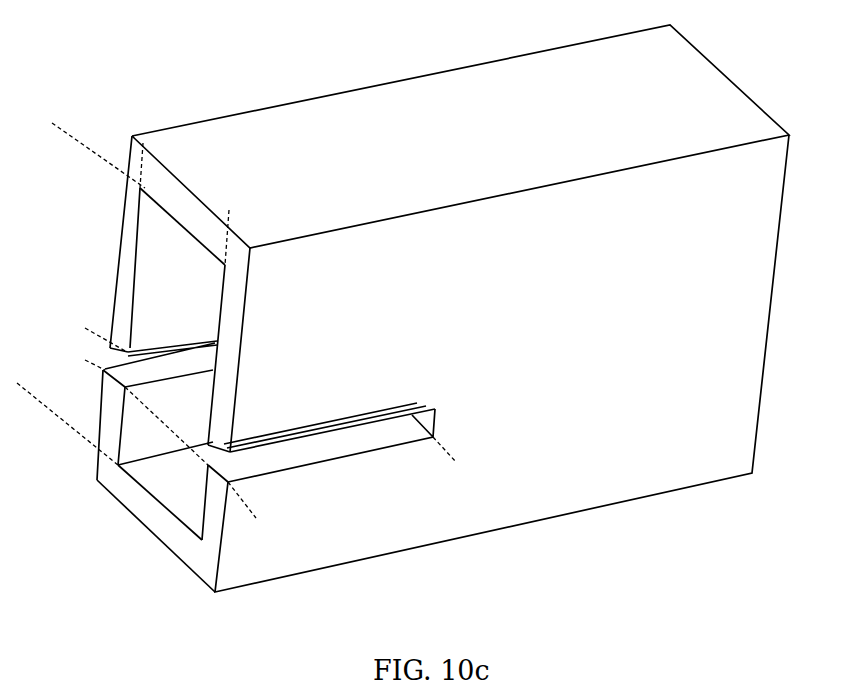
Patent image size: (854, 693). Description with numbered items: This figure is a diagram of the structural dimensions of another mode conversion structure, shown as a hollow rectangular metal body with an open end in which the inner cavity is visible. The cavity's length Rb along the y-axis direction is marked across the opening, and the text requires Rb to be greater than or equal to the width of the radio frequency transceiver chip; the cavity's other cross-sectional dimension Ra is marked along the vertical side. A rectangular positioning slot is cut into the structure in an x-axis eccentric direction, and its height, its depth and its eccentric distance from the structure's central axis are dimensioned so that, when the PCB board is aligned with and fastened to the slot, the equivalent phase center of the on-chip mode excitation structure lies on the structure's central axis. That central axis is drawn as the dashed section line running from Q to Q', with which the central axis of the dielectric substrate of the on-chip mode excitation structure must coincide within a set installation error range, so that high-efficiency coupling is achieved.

The inner cavity height dimension Ra is at (65, 132).
The length of the inner cavity along the y-axis direction Rb is at (148, 143).
The central axis QQ of the mode conversion structure Q is at (159, 334).
The central axis QQ of the mode conversion structure Q' is at (800, 205).